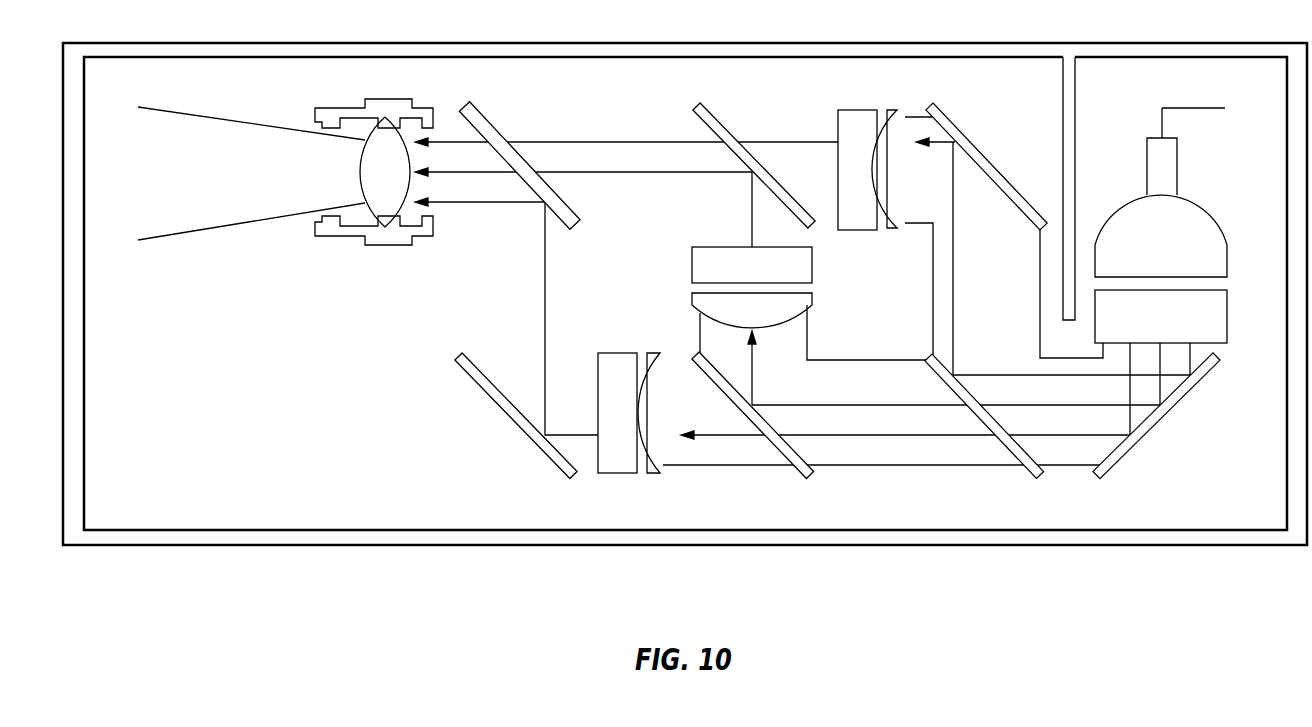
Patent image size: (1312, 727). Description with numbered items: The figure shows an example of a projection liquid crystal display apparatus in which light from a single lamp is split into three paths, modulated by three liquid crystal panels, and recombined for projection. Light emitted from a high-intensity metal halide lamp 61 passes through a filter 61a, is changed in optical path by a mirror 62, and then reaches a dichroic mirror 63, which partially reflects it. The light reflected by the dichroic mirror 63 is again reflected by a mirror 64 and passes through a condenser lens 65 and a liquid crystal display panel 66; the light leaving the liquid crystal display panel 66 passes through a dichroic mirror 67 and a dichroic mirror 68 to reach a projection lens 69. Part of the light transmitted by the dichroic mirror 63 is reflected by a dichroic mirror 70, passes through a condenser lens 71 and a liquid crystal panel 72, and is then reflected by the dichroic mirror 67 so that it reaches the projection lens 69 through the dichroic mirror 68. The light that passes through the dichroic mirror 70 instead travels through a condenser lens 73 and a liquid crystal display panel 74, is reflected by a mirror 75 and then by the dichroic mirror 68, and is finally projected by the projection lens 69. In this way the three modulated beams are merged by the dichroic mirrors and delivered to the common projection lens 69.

The high-intensity metal halide lamp 61 is at (1182, 192).
The filter 61a is at (1189, 306).
The mirror 62 is at (1161, 416).
The dichroic mirror 63 is at (1015, 435).
The mirror 64 is at (986, 182).
The condenser lens 65 is at (862, 150).
The liquid crystal display panel 66 is at (812, 151).
The dichroic mirror 67 is at (726, 150).
The dichroic mirror 68 is at (519, 153).
The projection lens 69 is at (407, 172).
The dichroic mirror 70 is at (782, 433).
The condenser lens 71 is at (717, 316).
The liquid crystal panel 72 is at (729, 246).
The condenser lens 73 is at (678, 433).
The liquid crystal display panel 74 is at (588, 433).
The mirror 75 is at (476, 416).